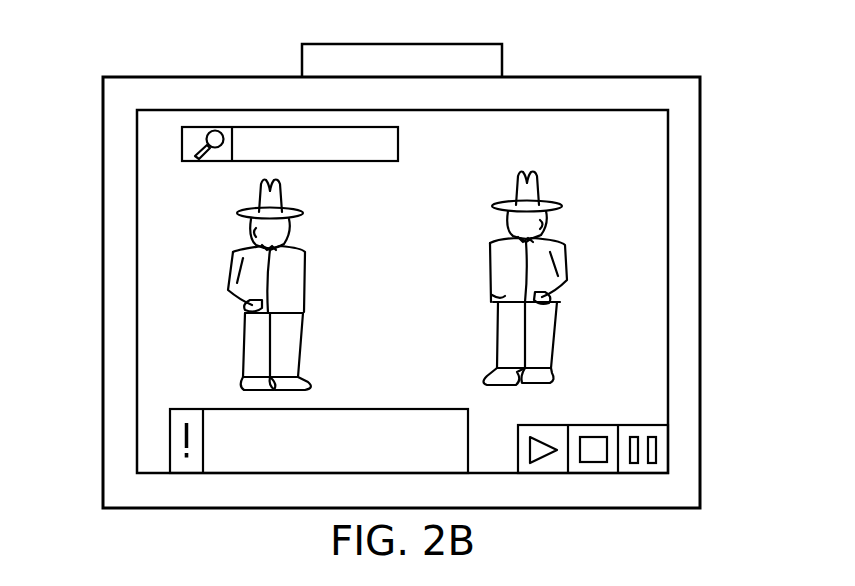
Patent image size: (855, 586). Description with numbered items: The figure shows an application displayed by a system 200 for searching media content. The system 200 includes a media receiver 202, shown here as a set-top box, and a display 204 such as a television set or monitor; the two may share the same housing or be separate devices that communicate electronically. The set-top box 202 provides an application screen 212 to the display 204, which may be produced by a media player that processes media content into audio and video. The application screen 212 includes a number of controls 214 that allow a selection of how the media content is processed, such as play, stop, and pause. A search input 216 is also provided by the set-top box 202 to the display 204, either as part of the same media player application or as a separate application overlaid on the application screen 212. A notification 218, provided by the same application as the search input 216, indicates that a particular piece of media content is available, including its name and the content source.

The system 200 is at (145, 35).
The media receiver 202 is at (485, 60).
The display 204 is at (103, 127).
The application screen 212 is at (642, 143).
The controls 214 is at (635, 423).
The search input 216 is at (263, 127).
The notification 218 is at (187, 409).